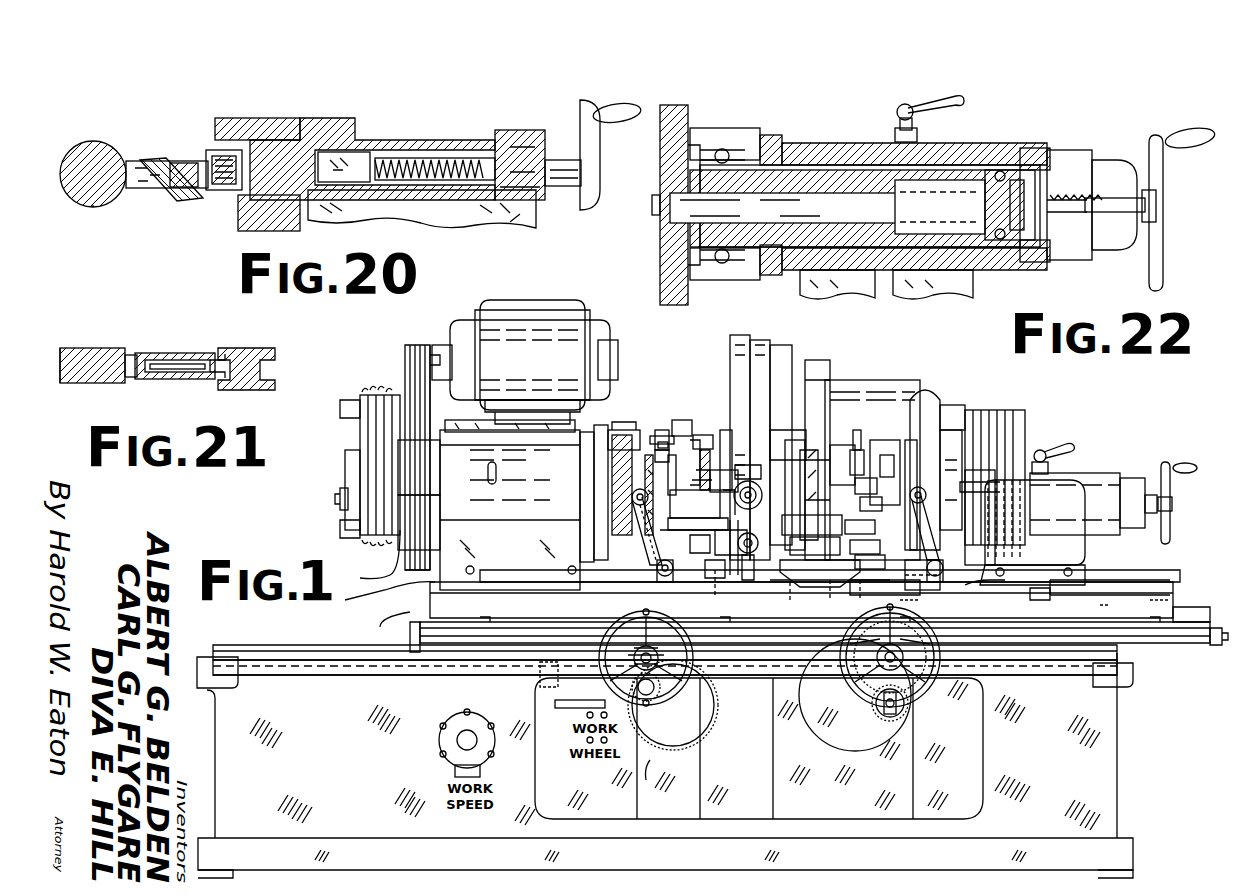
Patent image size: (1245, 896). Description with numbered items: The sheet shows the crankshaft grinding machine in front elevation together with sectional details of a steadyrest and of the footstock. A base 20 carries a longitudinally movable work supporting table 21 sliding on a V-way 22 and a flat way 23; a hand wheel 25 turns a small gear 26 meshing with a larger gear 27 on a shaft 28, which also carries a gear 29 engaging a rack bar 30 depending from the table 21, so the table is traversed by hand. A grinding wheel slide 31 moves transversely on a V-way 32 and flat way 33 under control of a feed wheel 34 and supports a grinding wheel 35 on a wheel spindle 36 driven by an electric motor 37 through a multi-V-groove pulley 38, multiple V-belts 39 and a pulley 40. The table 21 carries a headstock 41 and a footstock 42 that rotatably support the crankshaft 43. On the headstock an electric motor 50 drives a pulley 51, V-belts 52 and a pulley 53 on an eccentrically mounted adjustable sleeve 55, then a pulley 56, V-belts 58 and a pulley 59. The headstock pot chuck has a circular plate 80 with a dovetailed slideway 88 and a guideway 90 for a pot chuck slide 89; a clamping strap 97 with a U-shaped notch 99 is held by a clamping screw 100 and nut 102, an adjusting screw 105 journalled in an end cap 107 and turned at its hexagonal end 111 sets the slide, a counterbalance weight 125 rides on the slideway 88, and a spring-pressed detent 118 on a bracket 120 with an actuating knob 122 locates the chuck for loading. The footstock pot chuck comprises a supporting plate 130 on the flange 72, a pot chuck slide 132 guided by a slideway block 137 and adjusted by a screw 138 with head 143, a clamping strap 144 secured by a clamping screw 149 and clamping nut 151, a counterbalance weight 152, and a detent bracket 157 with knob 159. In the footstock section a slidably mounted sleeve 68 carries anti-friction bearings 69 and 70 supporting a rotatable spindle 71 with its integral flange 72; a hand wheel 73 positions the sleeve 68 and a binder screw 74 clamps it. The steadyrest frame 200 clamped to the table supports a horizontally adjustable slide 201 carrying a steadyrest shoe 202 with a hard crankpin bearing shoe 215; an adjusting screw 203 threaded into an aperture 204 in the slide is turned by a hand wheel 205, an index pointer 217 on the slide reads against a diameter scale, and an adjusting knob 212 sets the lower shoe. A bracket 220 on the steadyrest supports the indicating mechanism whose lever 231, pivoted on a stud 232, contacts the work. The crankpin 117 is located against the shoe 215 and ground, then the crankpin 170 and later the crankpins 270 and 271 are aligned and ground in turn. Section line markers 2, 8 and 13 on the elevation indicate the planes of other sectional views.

In FIG. 20, the crankpin 117 is at (90, 142).
In FIG. 21, the crankpin 117 is at (60, 383).
In FIG. 20, the crankshaft 43 is at (73, 210).
In FIG. 21, the crankshaft 43 is at (74, 328).
In FIG. 1, the crankshaft 43 is at (806, 450).
In FIG. 20, the crankpin bearing shoe 215 is at (137, 161).
In FIG. 21, the crankpin bearing shoe 215 is at (132, 352).
In FIG. 20, the pivotally mounted lever 231 is at (175, 206).
In FIG. 21, the pivotally mounted lever 231 is at (152, 378).
In FIG. 20, the steadyrest shoe 202 is at (186, 162).
In FIG. 21, the steadyrest shoe 202 is at (167, 350).
In FIG. 20, the steadyrest frame 200 is at (240, 208).
In FIG. 21, the steadyrest frame 200 is at (275, 355).
In FIG. 1, the steadyrest frame 200 is at (765, 573).
In FIG. 20, the bracket 220 is at (254, 119).
In FIG. 20, the horizontally adjustable slide 201 is at (255, 145).
In FIG. 20, the threaded aperture 204 is at (415, 137).
In FIG. 20, the index pointer 217 is at (345, 170).
In FIG. 20, the rotatable adjusting screw 203 is at (475, 200).
In FIG. 20, the hand wheel 205 is at (590, 200).
In FIG. 21, the stud 232 is at (223, 348).
In FIG. 22, the flange 72 is at (660, 296).
In FIG. 1, the flange 72 is at (932, 444).
In FIG. 22, the anti-friction bearing 69 is at (722, 146).
In FIG. 22, the slidably mounted sleeve 68 is at (768, 136).
In FIG. 22, the footstock 42 is at (833, 141).
In FIG. 1, the footstock 42 is at (1098, 477).
In FIG. 22, the rotatable spindle 71 is at (938, 168).
In FIG. 22, the anti-friction bearing 70 is at (987, 168).
In FIG. 22, the binder screw 74 is at (897, 115).
In FIG. 1, the binder screw 74 is at (1068, 453).
In FIG. 22, the hand wheel 73 is at (1170, 137).
In FIG. 1, the hand wheel 73 is at (1166, 464).
In FIG. 1, the base 20 is at (325, 649).
In FIG. 1, the work supporting table 21 is at (430, 610).
In FIG. 1, the V-way 22 is at (337, 670).
In FIG. 1, the flat way 23 is at (278, 648).
In FIG. 1, the hand wheel 25 is at (625, 613).
In FIG. 1, the small gear 26 is at (622, 673).
In FIG. 1, the larger gear 27 is at (690, 760).
In FIG. 1, the shaft 28 is at (706, 720).
In FIG. 1, the gear 29 is at (665, 735).
In FIG. 1, the rack bar 30 is at (545, 687).
In FIG. 1, the grinding wheel slide 31 is at (812, 600).
In FIG. 1, the V-way 32 is at (830, 573).
In FIG. 1, the flat way 33 is at (910, 597).
In FIG. 1, the feed wheel 34 is at (915, 674).
In FIG. 1, the grinding wheel 35 is at (776, 450).
In FIG. 1, the wheel spindle 36 is at (950, 437).
In FIG. 1, the electric motor 37 is at (810, 392).
In FIG. 1, the multi-V-groove pulley 38 is at (1028, 435).
In FIG. 1, the multiple V-belts 39 is at (1015, 410).
In FIG. 1, the multi-V-groove pulley 40 is at (1018, 513).
In FIG. 1, the headstock 41 is at (480, 566).
In FIG. 1, the electric motor 50 is at (512, 319).
In FIG. 1, the multi-V-groove pulley 51 is at (405, 352).
In FIG. 1, the multiple V-belts 52 is at (405, 374).
In FIG. 1, the multi-V-groove pulley 53 is at (410, 570).
In FIG. 1, the eccentrically mounted adjustable sleeve 55 is at (340, 507).
In FIG. 1, the multi-V-groove pulley 56 is at (347, 483).
In FIG. 1, the multiple V-belts 58 is at (368, 393).
In FIG. 1, the multi-V-groove pulley 59 is at (345, 412).
In FIG. 1, the circular plate 80 is at (645, 412).
In FIG. 1, the dovetailed slideway 88 is at (625, 456).
In FIG. 1, the slideway 90 is at (635, 472).
In FIG. 1, the clamping strap 97 is at (686, 438).
In FIG. 1, the U-shaped notch 99 is at (692, 448).
In FIG. 1, the clamping screw 100 is at (670, 442).
In FIG. 1, the nut 102 is at (720, 432).
In FIG. 1, the adjusting screw 105 is at (665, 425).
In FIG. 1, the end cap 107 is at (648, 447).
In FIG. 1, the hexagonally shaped end 111 is at (660, 429).
In FIG. 1, the spring-pressed detent 118 is at (633, 510).
In FIG. 1, the bracket 120 is at (630, 575).
In FIG. 1, the actuating knob 122 is at (630, 498).
In FIG. 1, the counterbalance weight 125 is at (703, 480).
In FIG. 1, the supporting plate 130 is at (926, 410).
In FIG. 1, the pot chuck slide 132 is at (867, 527).
In FIG. 1, the slideway block 137 is at (867, 546).
In FIG. 1, the adjusting screw 138 is at (896, 432).
In FIG. 1, the hexagonally shaped head 143 is at (897, 440).
In FIG. 1, the clamping strap 144 is at (873, 480).
In FIG. 1, the clamping screw 149 is at (872, 470).
In FIG. 1, the clamping nut 151 is at (844, 458).
In FIG. 1, the counterbalance weight 152 is at (847, 552).
In FIG. 1, the bracket 157 is at (975, 605).
In FIG. 1, the actuating knob 159 is at (875, 504).
In FIG. 1, the crankpin 170 is at (811, 527).
In FIG. 1, the adjusting knob 212 is at (720, 532).
In FIG. 1, the crankpin 270 is at (725, 450).
In FIG. 1, the crankpin 271 is at (854, 446).
In FIG. 1, the pot chuck slide 89 is at (703, 543).
In FIG. 1, the section line 2 is at (702, 407).
In FIG. 1, the section line 8 is at (847, 380).
In FIG. 1, the section line 13 is at (718, 380).